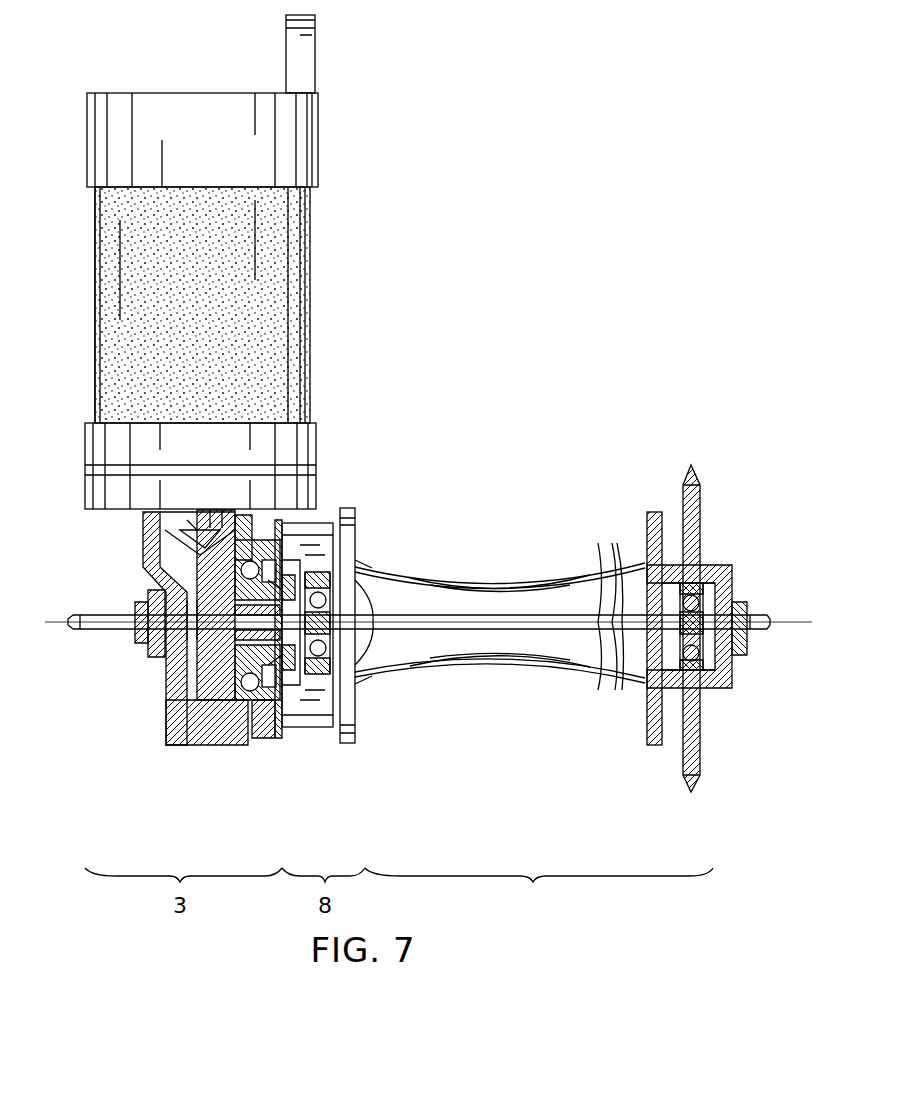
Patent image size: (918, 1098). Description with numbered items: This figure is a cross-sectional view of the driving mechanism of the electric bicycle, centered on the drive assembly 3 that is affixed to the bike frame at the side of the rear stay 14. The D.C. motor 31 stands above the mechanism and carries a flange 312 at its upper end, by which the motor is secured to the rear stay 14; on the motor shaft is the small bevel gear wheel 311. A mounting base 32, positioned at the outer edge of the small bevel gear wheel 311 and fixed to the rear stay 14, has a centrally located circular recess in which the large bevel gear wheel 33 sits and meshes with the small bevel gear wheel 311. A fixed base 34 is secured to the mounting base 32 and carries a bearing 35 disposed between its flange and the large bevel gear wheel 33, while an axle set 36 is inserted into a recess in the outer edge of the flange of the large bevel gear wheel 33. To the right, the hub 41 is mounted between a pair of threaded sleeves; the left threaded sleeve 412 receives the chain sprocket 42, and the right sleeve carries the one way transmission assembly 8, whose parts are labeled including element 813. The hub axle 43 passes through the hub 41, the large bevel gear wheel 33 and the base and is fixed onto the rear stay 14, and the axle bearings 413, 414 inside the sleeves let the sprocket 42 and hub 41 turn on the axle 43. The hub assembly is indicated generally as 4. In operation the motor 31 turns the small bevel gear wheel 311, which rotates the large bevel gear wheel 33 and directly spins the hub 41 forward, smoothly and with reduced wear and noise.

The drive assembly 3 is at (212, 589).
The D.C. motor 31 is at (280, 248).
The gear wheel 311 is at (220, 557).
The flange 312 is at (300, 62).
The mounting base 32 is at (178, 692).
The large bevel gear wheel 33 is at (180, 745).
The fixed base 34 is at (276, 738).
The bearing 35 is at (265, 738).
The axle set 36 is at (215, 730).
The one way transmission assembly 8 is at (348, 508).
The coupling gear 813 is at (285, 578).
The roller assembly 4 is at (539, 893).
The hub 41 is at (500, 612).
The threaded sleeve 412 is at (325, 585).
The axle bearing 413 is at (372, 568).
The axle bearing 414 is at (705, 655).
The chain sprocket 42 is at (695, 520).
The hub axle 43 is at (160, 657).
The rear stay 14 is at (733, 590).